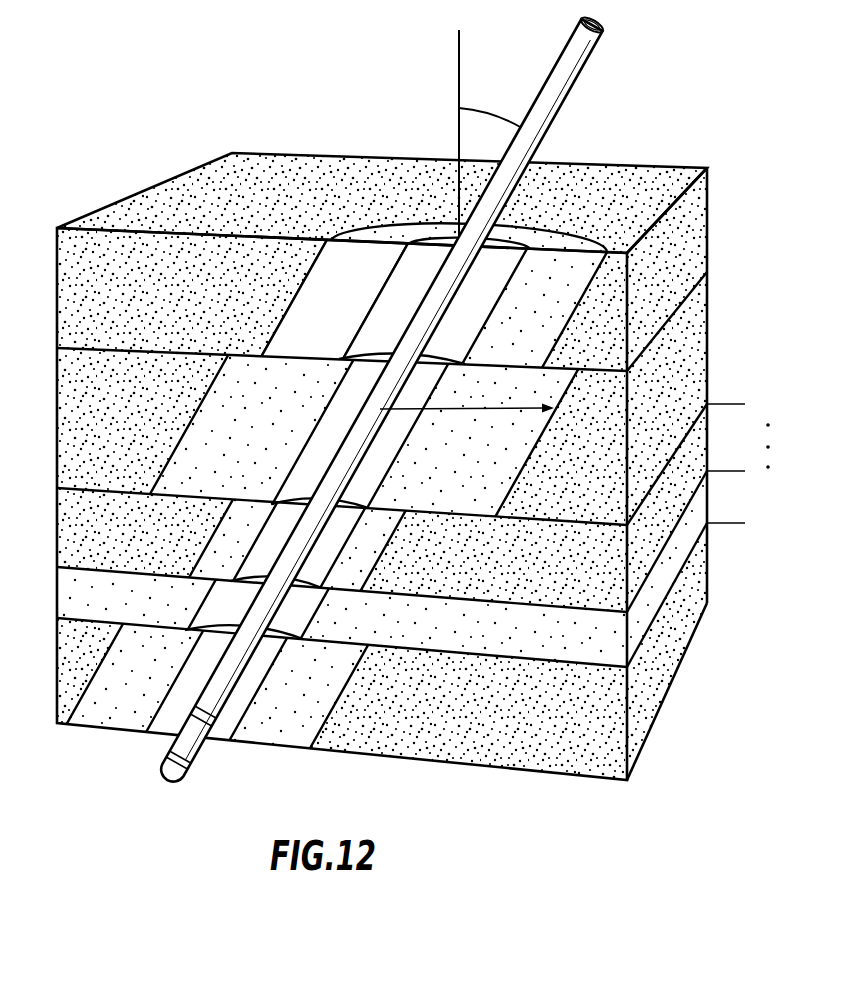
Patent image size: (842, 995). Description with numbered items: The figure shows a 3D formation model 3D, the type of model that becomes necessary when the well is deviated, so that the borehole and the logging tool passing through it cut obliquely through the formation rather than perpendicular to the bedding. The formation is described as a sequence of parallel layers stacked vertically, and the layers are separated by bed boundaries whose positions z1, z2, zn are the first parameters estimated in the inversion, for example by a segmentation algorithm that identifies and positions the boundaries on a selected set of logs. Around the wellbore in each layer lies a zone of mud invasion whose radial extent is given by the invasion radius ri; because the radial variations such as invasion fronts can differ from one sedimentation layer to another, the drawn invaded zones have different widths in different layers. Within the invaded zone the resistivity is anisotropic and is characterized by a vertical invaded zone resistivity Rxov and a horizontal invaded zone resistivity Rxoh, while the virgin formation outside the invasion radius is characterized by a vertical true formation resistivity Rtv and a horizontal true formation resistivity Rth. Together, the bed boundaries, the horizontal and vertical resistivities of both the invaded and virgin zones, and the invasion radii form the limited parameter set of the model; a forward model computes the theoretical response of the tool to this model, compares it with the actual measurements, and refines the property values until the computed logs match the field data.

The 3D formation model 3D is at (353, 476).
The first bed boundary depth z1 is at (707, 168).
The second bed boundary depth z2 is at (707, 272).
The n-th bed boundary depth zn is at (707, 603).
The invasion radius ri is at (467, 392).
The vertical invaded zone resistivity Rxov is at (336, 500).
The horizontal invaded zone resistivity Rxoh is at (336, 500).
The vertical true formation resistivity Rtv is at (336, 500).
The horizontal true formation resistivity Rth is at (336, 500).
The element tool is at (383, 398).